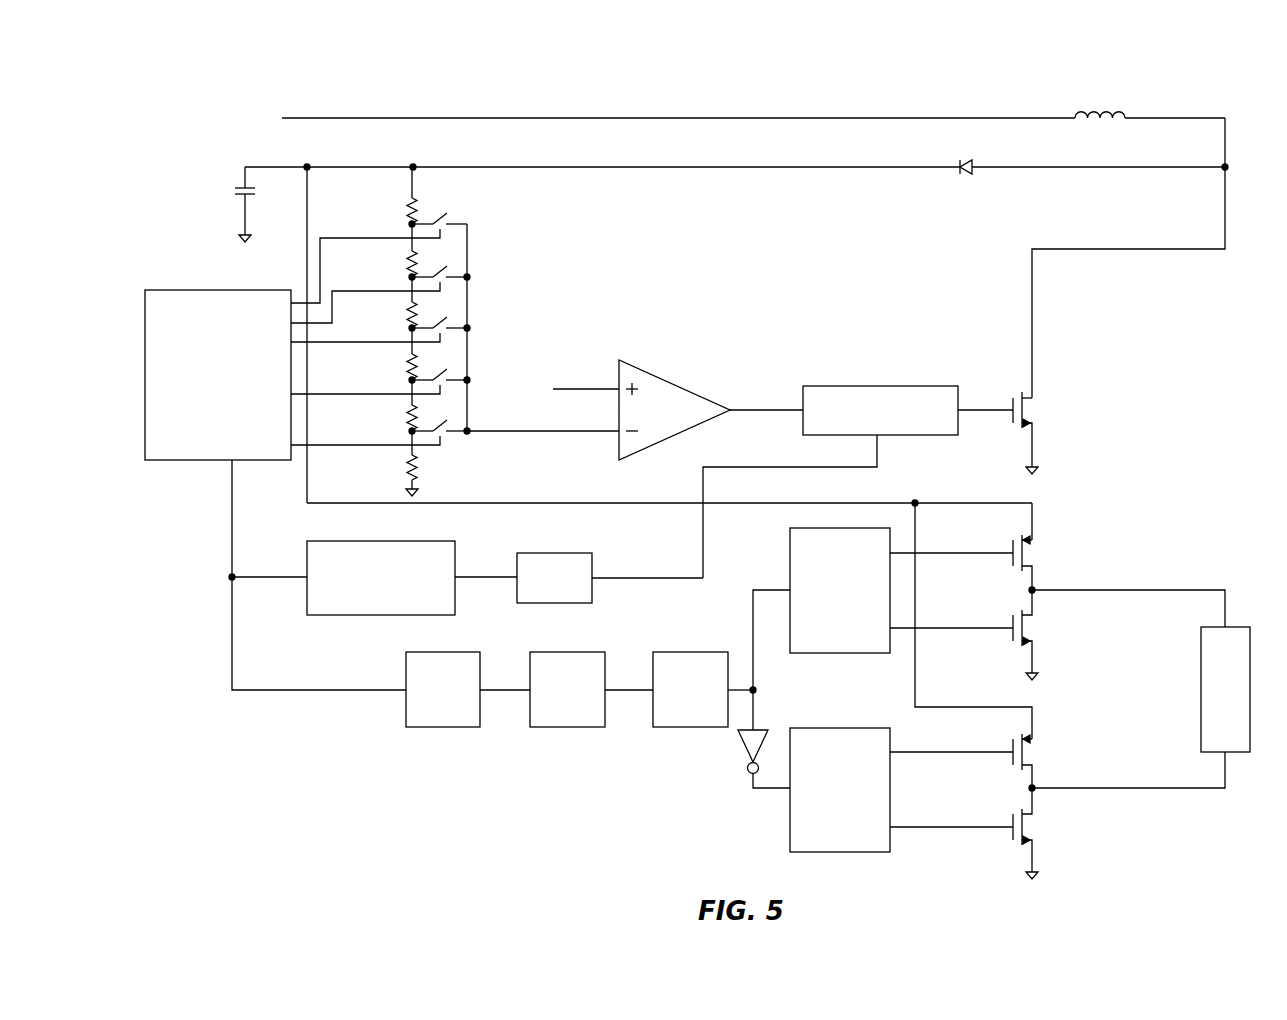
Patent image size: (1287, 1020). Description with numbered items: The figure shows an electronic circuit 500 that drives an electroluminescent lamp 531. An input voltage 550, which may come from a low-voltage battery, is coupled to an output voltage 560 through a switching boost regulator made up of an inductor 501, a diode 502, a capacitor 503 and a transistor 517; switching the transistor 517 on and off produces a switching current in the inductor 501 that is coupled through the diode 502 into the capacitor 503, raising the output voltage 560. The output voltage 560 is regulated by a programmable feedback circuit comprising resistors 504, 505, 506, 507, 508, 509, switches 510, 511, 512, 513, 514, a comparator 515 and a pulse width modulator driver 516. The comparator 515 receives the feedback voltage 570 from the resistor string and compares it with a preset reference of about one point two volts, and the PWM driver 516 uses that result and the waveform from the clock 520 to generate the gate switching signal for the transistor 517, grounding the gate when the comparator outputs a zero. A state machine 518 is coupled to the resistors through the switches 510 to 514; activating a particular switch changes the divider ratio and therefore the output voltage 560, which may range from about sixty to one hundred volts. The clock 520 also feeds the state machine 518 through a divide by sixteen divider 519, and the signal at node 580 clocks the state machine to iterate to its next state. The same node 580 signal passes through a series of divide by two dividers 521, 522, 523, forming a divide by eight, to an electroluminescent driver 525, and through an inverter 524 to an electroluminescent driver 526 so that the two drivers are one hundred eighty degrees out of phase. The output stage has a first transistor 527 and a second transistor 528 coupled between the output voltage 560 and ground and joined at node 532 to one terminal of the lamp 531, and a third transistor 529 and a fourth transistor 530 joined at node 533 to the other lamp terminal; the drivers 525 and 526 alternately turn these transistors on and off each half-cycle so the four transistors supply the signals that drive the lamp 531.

The circuit 500 is at (283, 823).
The inductor 501 is at (1120, 110).
The diode 502 is at (966, 176).
The capacitor 503 is at (238, 192).
The resistor 504 is at (410, 210).
The resistor 505 is at (410, 263).
The resistor 506 is at (410, 316).
The resistor 507 is at (410, 367).
The resistor 508 is at (410, 418).
The resistor 509 is at (410, 470).
The switch 510 is at (447, 212).
The switch 511 is at (447, 265).
The switch 512 is at (447, 318).
The switch 513 is at (447, 370).
The switch 514 is at (450, 438).
The comparator 515 is at (660, 384).
The pulse width modulator driver 516 is at (860, 386).
The transistor 517 is at (1038, 410).
The state machine 518 is at (218, 375).
The divide by 16 divider 519 is at (332, 616).
The clock 520 is at (593, 548).
The divide by two divider 521 is at (437, 727).
The divide by two divider 522 is at (573, 727).
The divide by two divider 523 is at (690, 652).
The inverter 524 is at (745, 750).
The electroluminescent driver 525 is at (901, 590).
The electroluminescent driver 526 is at (901, 790).
The first transistor 527 is at (1035, 553).
The second transistor 528 is at (1035, 628).
The third transistor 529 is at (1035, 752).
The fourth transistor 530 is at (1035, 827).
The electroluminescent lamp 531 is at (1200, 690).
The node 532 is at (1030, 590).
The node 533 is at (1030, 788).
The input voltage 550 is at (232, 118).
The output voltage 560 is at (388, 146).
The feedback voltage 570 is at (568, 455).
The node 580 is at (230, 577).